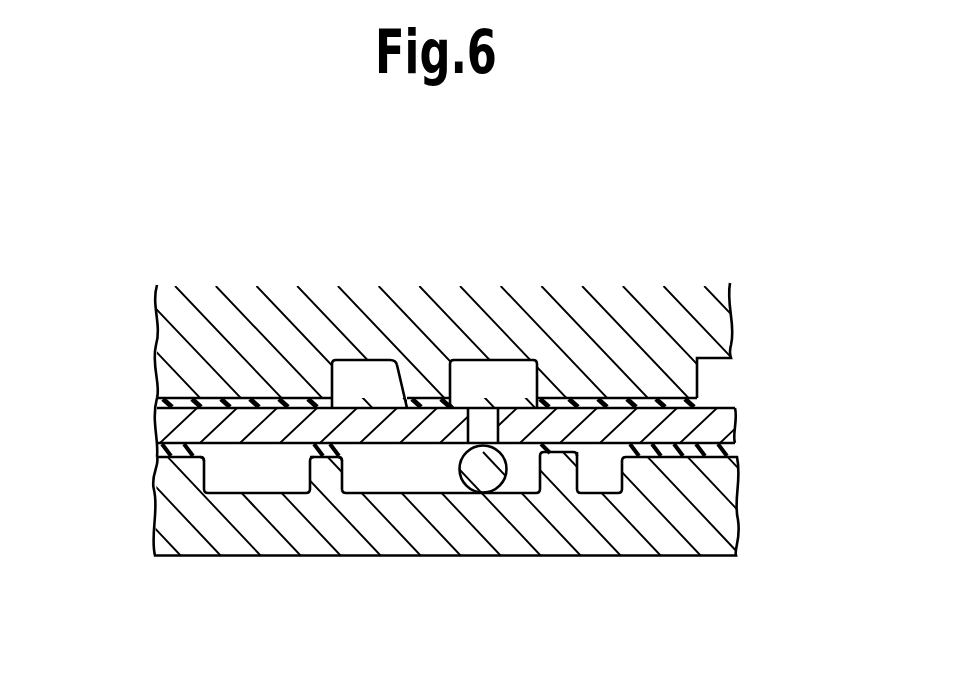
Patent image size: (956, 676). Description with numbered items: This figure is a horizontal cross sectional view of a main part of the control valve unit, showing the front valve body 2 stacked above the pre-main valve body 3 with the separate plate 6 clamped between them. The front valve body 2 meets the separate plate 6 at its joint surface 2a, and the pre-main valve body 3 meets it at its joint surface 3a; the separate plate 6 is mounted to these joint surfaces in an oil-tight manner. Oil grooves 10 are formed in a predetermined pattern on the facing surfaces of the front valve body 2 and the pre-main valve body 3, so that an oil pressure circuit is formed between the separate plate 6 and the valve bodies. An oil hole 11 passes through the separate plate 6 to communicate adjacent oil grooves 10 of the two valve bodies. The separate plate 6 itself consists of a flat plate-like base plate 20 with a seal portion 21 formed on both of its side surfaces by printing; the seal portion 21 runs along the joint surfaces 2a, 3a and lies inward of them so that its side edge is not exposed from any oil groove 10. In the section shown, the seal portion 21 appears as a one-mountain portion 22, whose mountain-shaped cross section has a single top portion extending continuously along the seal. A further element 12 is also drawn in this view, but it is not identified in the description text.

The front valve body 2 is at (460, 303).
The joint surface 2a is at (157, 412).
The pre-main valve body 3 is at (412, 504).
The joint surface 3a is at (166, 431).
The separate plate 6 is at (499, 420).
The oil groove 10 is at (475, 361).
The oil hole 11 is at (490, 423).
The ball receiving recess 12 is at (400, 486).
The base plate 20 is at (733, 427).
The seal portion 21 is at (730, 388).
The one-mountain portion 22 is at (485, 469).